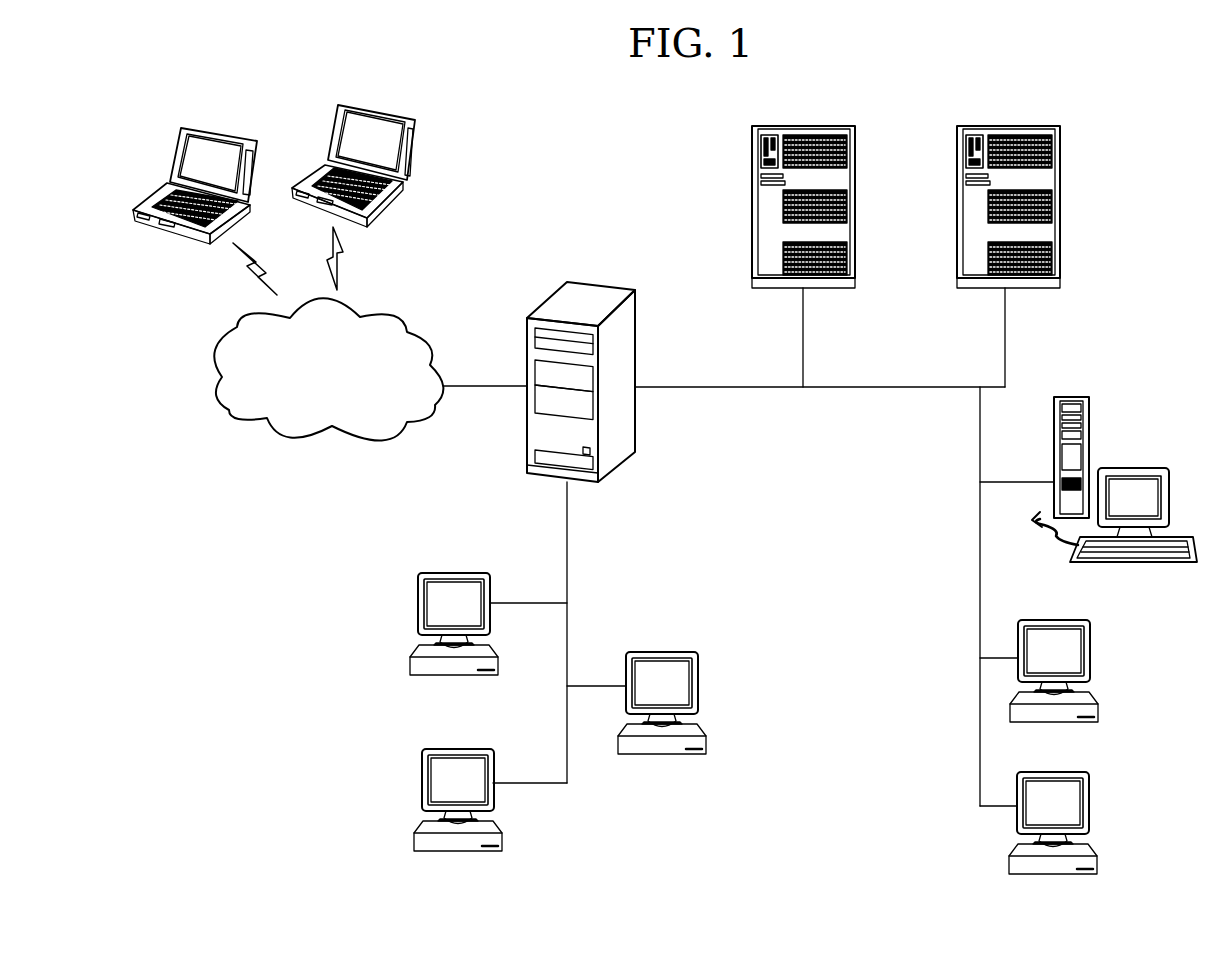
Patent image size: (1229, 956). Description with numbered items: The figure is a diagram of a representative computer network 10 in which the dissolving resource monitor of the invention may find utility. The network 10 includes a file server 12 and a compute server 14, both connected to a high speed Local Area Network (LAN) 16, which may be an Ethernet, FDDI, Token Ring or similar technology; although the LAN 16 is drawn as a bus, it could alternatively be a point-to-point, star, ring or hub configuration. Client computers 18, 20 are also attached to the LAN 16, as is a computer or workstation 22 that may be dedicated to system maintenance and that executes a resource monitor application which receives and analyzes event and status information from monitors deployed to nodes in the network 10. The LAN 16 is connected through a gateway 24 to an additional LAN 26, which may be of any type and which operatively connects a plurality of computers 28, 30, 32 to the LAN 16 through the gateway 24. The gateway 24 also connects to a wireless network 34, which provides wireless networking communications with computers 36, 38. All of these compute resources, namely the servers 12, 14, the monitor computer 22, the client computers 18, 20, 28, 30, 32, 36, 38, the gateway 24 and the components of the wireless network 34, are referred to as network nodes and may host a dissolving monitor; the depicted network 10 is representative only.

The computer network 10 is at (541, 118).
The file server 12 is at (803, 126).
The compute server 14 is at (1008, 130).
The Local Area Network (LAN) 16 is at (900, 388).
The client computer 18 is at (1040, 620).
The client computer 20 is at (1040, 772).
The computer or workstation 22 is at (1120, 468).
The gateway 24 is at (618, 284).
The additional LAN 26 is at (567, 580).
The computer 28 is at (650, 653).
The computer 30 is at (473, 573).
The computer 32 is at (478, 749).
The wireless network 34 is at (385, 314).
The computer 36 is at (390, 110).
The computer 38 is at (238, 125).